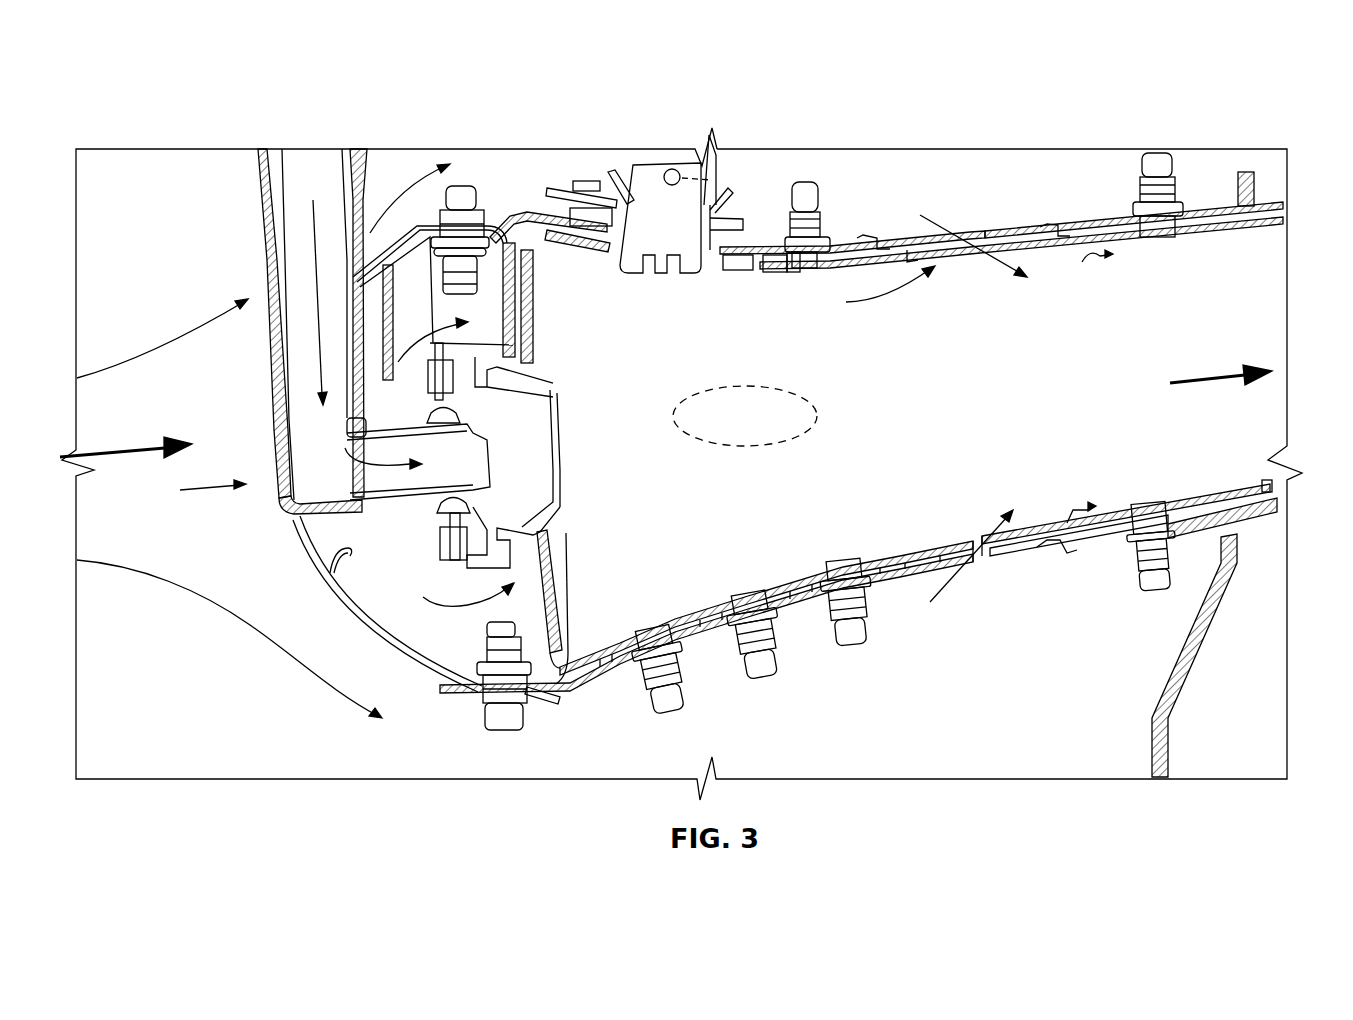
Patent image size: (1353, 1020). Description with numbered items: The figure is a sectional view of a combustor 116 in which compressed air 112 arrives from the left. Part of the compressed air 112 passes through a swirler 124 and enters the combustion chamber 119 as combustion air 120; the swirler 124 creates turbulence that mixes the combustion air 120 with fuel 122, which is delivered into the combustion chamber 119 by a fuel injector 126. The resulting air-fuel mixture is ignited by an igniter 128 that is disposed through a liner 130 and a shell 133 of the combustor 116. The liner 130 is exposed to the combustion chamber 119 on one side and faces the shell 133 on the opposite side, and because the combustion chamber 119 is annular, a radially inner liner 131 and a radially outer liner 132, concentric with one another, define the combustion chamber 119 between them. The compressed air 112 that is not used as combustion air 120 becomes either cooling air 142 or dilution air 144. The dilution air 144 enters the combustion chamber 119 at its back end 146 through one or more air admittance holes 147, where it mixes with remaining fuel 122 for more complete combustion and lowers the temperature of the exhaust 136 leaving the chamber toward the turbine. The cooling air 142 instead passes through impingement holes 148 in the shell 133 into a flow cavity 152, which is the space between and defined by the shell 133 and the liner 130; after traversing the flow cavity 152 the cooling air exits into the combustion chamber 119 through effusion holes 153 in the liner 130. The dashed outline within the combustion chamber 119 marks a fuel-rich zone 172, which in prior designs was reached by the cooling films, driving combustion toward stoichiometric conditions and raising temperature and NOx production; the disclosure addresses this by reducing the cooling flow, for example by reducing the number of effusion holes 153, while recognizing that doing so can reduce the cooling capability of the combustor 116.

The compressed air 112 is at (118, 457).
The combustor 116 is at (878, 172).
The combustion chamber 119 is at (1068, 417).
The combustion air 120 is at (200, 490).
The fuel 122 is at (313, 260).
The swirler 124 is at (563, 550).
The fuel injector 126 is at (307, 487).
The igniter 128 is at (657, 210).
The liner 130 is at (1280, 230).
The radially inner liner 131 is at (933, 547).
The radially outer liner 132 is at (1040, 250).
The shell 133 is at (1120, 218).
The exhaust 136 is at (1243, 374).
The cooling air 142 is at (863, 235).
The dilution air 144 is at (990, 257).
The back end 146 is at (1090, 733).
The air admittance holes 147 is at (975, 560).
The impingement holes 148 is at (880, 238).
The flow cavity 152 is at (1020, 230).
The effusion holes 153 is at (954, 386).
The fuel-rich zone 172 is at (745, 416).